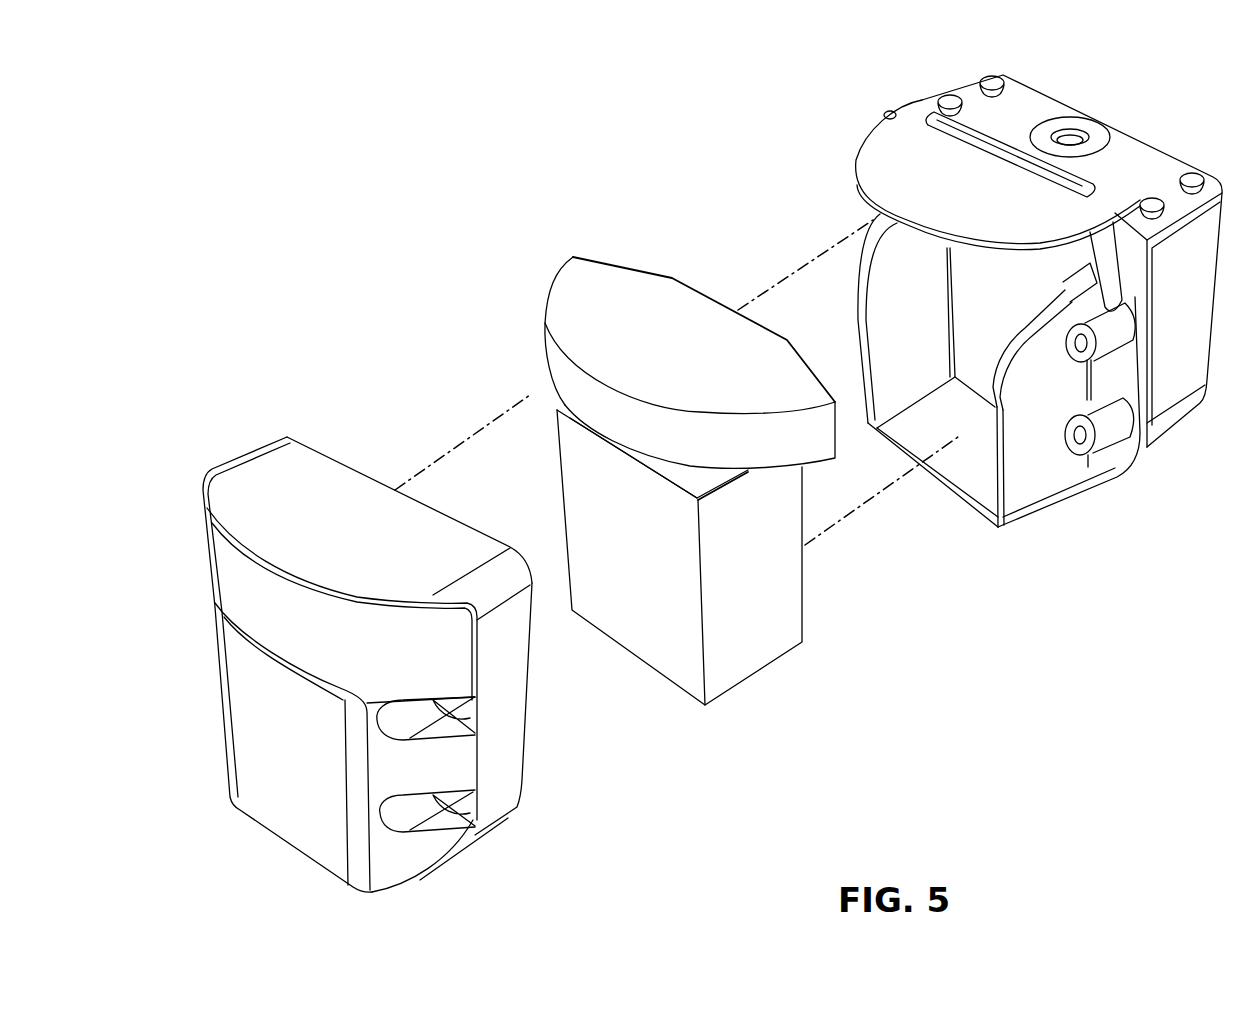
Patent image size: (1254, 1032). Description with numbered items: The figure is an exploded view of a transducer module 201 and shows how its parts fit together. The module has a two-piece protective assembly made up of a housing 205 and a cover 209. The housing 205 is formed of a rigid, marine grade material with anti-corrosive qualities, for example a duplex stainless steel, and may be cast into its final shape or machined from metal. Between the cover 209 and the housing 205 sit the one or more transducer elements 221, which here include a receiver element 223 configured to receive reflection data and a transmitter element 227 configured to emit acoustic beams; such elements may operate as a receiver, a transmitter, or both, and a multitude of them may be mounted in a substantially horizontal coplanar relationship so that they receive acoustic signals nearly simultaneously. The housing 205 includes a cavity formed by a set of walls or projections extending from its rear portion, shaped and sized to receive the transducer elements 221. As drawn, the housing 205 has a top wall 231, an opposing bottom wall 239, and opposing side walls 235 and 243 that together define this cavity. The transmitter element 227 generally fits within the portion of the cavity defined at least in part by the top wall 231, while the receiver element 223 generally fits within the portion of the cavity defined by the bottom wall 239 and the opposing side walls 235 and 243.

The transducer module 201 is at (421, 120).
The housing 205 is at (1040, 106).
The cover 209 is at (277, 483).
The transducer elements 221 is at (503, 358).
The receiver element 223 is at (763, 650).
The transmitter element 227 is at (633, 305).
The top wall 231 is at (877, 165).
The side wall 235 is at (882, 303).
The bottom wall 239 is at (962, 463).
The side wall 243 is at (1025, 463).